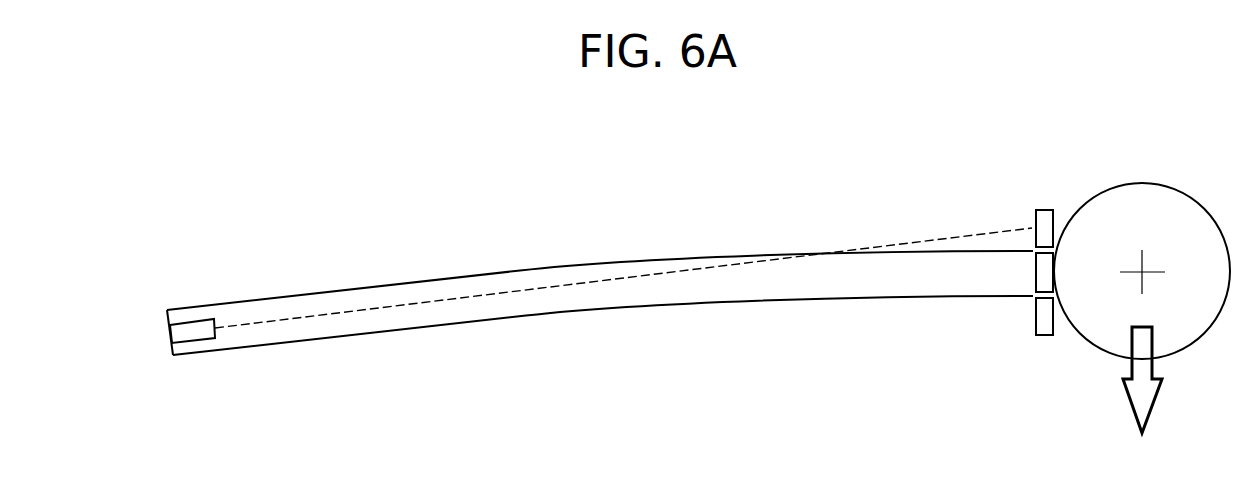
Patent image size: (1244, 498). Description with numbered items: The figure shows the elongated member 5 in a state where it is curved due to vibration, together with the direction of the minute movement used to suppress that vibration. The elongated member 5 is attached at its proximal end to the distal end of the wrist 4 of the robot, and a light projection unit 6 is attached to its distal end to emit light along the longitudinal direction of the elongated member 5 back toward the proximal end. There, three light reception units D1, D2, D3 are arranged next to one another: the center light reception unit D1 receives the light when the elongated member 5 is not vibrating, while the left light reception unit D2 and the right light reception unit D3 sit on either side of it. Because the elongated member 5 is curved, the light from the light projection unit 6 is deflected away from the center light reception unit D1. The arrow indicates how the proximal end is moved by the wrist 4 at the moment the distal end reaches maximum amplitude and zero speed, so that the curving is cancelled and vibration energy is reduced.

The wrist 4 is at (1140, 183).
The elongated member 5 is at (525, 268).
The light projection unit 6 is at (192, 322).
The center light reception unit D1 is at (1035, 268).
The left light reception unit D2 is at (1040, 336).
The right light reception unit D3 is at (1043, 208).